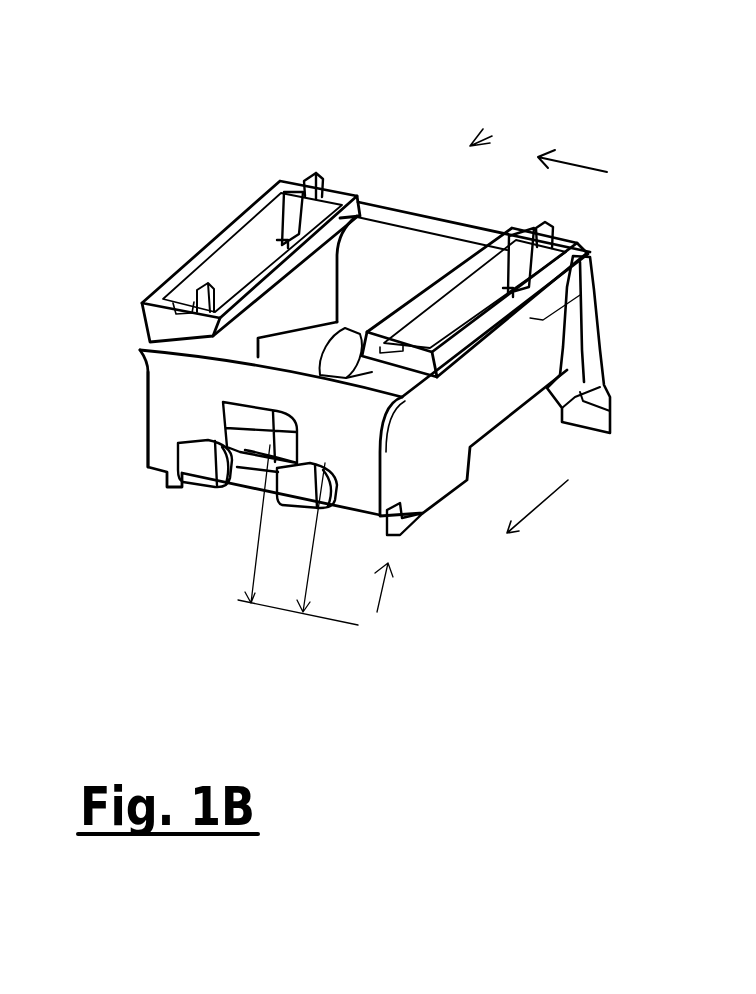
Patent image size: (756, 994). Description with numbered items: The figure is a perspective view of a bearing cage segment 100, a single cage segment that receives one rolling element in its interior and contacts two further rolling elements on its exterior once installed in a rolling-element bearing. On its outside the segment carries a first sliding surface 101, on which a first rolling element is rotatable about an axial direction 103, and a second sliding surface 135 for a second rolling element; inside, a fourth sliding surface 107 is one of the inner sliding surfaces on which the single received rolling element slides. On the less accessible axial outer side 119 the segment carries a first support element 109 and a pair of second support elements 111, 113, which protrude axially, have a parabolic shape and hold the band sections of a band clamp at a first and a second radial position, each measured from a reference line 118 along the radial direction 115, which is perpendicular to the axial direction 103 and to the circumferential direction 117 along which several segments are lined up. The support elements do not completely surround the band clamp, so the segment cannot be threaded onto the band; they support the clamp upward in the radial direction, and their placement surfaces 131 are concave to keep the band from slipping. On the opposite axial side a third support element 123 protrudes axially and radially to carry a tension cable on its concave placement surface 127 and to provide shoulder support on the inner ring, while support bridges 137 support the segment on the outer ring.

The bearing cage segment 100 is at (492, 136).
The first sliding surface 101 is at (165, 380).
The axial direction 103 is at (540, 513).
The fourth sliding surface 107 is at (303, 274).
The first support element 109 is at (243, 432).
The second support element 111 is at (205, 473).
The second support element 113 is at (400, 558).
The radial direction 115 is at (377, 610).
The circumferential direction 117 is at (572, 164).
The reference line 118 is at (323, 622).
The axial outer side 119 is at (149, 424).
The third support element 123 is at (613, 433).
The placement surface 127 is at (603, 372).
The placement surface 131 is at (275, 478).
The second sliding surface 135 is at (596, 300).
The support bridge 137 is at (197, 258).